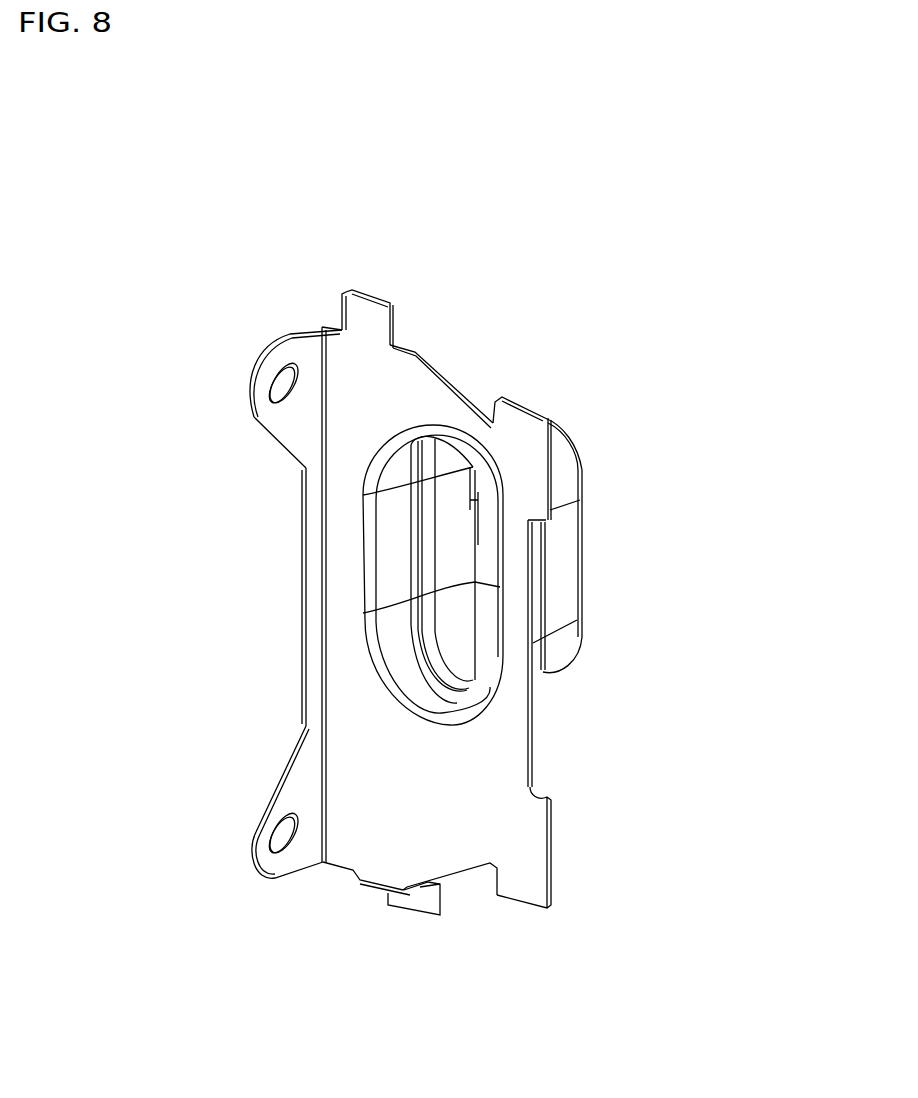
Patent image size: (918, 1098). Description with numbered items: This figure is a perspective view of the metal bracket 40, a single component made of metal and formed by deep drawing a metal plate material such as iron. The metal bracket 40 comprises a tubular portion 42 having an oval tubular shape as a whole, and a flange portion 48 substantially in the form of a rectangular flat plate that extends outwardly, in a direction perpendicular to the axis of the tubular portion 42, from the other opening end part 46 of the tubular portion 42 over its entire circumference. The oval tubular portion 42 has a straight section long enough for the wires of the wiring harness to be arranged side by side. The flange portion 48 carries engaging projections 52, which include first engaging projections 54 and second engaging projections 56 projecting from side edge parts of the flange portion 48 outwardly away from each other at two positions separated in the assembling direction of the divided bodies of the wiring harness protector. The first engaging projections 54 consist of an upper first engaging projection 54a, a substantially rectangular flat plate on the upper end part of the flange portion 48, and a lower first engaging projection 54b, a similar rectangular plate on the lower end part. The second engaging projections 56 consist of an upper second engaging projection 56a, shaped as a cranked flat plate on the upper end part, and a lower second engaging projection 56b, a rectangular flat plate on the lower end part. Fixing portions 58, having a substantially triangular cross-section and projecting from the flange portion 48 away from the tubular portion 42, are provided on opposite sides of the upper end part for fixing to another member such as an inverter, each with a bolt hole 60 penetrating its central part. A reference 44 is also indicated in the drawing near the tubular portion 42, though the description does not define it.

The metal bracket 40 is at (512, 212).
The tubular portion 42 is at (560, 563).
The protruding portion 44 is at (477, 545).
The other opening end part 46 is at (373, 566).
The flange portion 48 is at (362, 742).
The engaging projections 52 is at (587, 602).
The first engaging projections 54 is at (566, 412).
The upper first engaging projection 54a is at (368, 316).
The lower first engaging projection 54b is at (520, 428).
The second engaging projections 56 is at (575, 730).
The upper second engaging projection 56a is at (552, 730).
The lower second engaging projection 56b is at (620, 740).
The fixing portion 58 is at (272, 363).
The bolt hole 60 is at (282, 377).